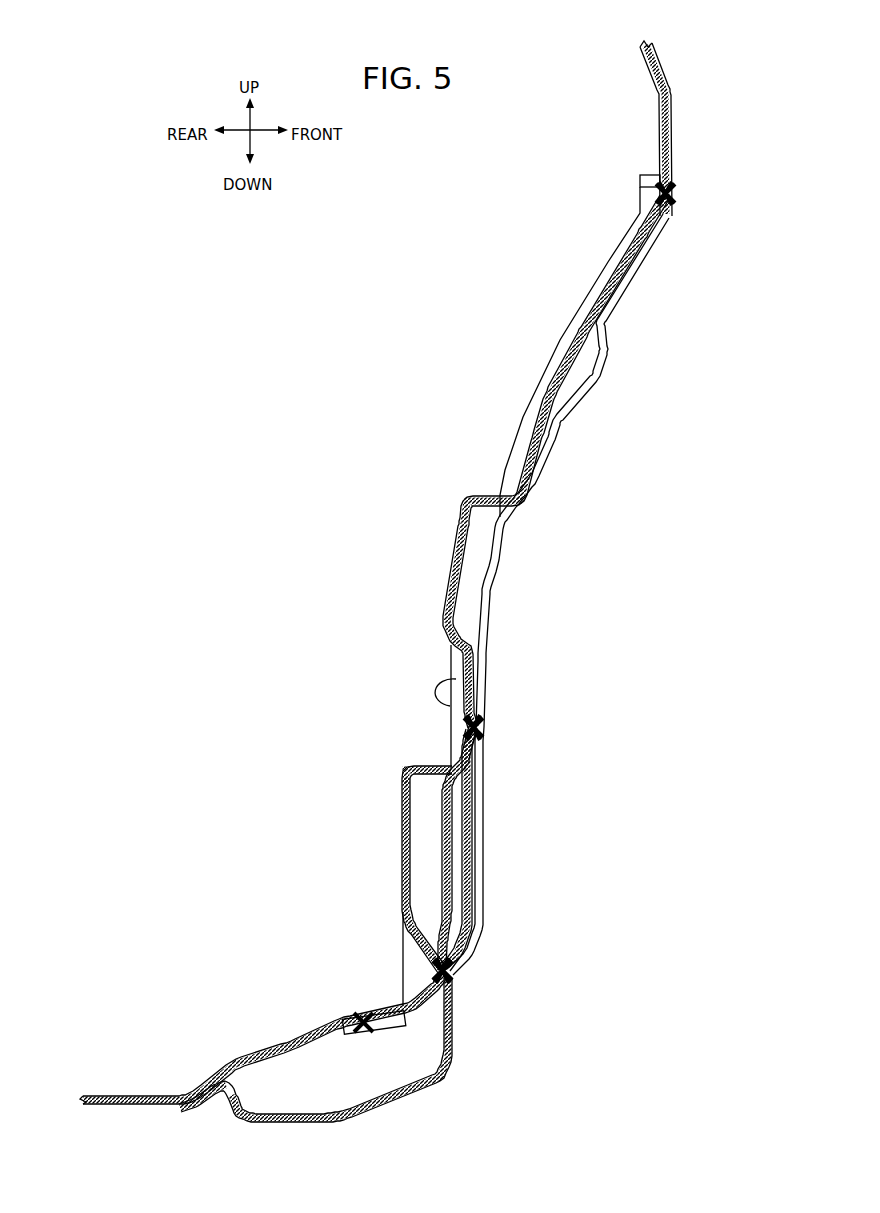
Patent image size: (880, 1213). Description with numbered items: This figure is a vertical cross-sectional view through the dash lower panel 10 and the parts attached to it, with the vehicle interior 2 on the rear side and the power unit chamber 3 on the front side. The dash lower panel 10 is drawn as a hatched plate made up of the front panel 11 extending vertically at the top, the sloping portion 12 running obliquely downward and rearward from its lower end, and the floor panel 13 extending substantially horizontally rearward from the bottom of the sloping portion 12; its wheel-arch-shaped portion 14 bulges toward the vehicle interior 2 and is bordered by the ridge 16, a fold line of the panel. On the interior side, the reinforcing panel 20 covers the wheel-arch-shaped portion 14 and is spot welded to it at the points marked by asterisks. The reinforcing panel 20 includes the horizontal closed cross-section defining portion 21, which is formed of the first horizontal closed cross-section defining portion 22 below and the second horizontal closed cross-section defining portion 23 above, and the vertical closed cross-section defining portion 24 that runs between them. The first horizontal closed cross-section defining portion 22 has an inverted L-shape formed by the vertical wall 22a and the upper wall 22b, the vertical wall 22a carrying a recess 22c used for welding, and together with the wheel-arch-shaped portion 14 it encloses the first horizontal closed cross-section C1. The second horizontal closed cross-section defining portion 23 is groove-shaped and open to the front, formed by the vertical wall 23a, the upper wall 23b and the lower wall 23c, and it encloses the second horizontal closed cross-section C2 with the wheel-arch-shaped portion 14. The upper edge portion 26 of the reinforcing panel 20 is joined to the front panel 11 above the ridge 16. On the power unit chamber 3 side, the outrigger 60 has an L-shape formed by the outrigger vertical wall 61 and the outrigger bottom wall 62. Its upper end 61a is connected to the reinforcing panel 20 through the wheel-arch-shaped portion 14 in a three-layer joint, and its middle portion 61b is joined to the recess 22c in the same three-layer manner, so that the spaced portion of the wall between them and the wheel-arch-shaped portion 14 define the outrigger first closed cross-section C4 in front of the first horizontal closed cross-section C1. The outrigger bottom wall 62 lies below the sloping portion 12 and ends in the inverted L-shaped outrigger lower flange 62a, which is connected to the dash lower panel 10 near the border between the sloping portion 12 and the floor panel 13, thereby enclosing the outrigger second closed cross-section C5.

The dash lower panel 10 is at (680, 62).
The front panel 11 is at (673, 145).
The sloping portion 12 is at (272, 1042).
The floor panel portion 13 is at (125, 1095).
The wheel-arch-shaped portion 14 is at (605, 350).
The ridge 16 is at (673, 228).
The reinforcing panel 20 is at (512, 436).
The horizontal closed cross-section defining portion 21 is at (284, 540).
The first horizontal closed cross-section defining portion 22 is at (333, 713).
The vertical wall 22a is at (402, 812).
The upper wall 22b is at (445, 764).
The recess 22c is at (427, 963).
The second horizontal closed cross-section defining portion 23 is at (333, 492).
The vertical wall 23a is at (452, 583).
The upper wall 23b is at (463, 494).
The lower wall 23c is at (446, 652).
The vertical closed cross-section defining portion 24 is at (556, 347).
The upper edge portion 26 is at (640, 180).
The outrigger 60 is at (470, 1082).
The outrigger vertical wall 61 is at (483, 870).
The upper end 61a is at (484, 742).
The middle portion 61b is at (455, 980).
The outrigger bottom wall 62 is at (367, 1117).
The outrigger lower flange 62a is at (204, 1112).
The vehicle interior 2 is at (210, 506).
The power unit chamber 3 is at (684, 506).
The first horizontal closed cross-section C1 is at (428, 868).
The second horizontal closed cross-section C2 is at (474, 588).
The outrigger first closed cross-section C4 is at (476, 824).
The outrigger second closed cross-section C5 is at (300, 1116).